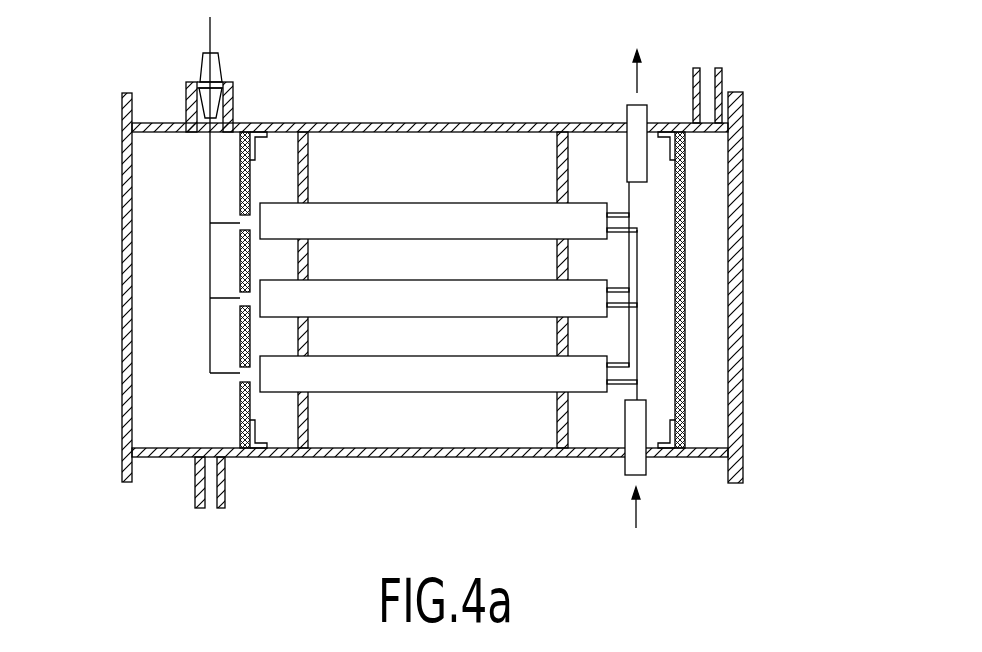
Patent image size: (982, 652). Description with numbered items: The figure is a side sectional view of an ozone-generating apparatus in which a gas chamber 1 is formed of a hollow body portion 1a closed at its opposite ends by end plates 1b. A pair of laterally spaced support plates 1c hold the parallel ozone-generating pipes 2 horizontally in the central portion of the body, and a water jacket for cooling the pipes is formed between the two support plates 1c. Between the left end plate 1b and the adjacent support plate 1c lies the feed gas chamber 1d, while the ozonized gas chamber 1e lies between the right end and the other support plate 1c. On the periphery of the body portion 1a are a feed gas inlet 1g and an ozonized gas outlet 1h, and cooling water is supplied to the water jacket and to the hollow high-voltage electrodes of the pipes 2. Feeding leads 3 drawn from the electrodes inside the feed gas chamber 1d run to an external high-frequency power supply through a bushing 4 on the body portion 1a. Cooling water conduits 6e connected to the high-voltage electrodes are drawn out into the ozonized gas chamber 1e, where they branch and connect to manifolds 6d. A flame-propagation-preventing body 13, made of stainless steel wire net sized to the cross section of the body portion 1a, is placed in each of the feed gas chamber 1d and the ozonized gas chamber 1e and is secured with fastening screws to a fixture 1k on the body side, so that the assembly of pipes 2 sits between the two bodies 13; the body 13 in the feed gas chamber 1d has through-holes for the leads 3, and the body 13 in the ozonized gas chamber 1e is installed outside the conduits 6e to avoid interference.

The gas chamber 1 is at (446, 123).
The body portion 1a is at (353, 453).
The end plate 1b is at (124, 415).
The support plate 1c is at (305, 147).
The feed gas chamber 1d is at (160, 274).
The ozonized gas chamber 1e is at (712, 423).
The feed gas inlet 1g is at (195, 493).
The ozonized gas outlet 1h is at (722, 78).
The fixture 1k is at (252, 128).
The ozone-generating pipe 2 is at (429, 236).
The feeding lead 3 is at (208, 247).
The bushing 4 is at (206, 68).
The manifold 6d is at (637, 438).
The cooling water conduit 6e is at (638, 340).
The flame-propagation-preventing body 13 is at (240, 405).